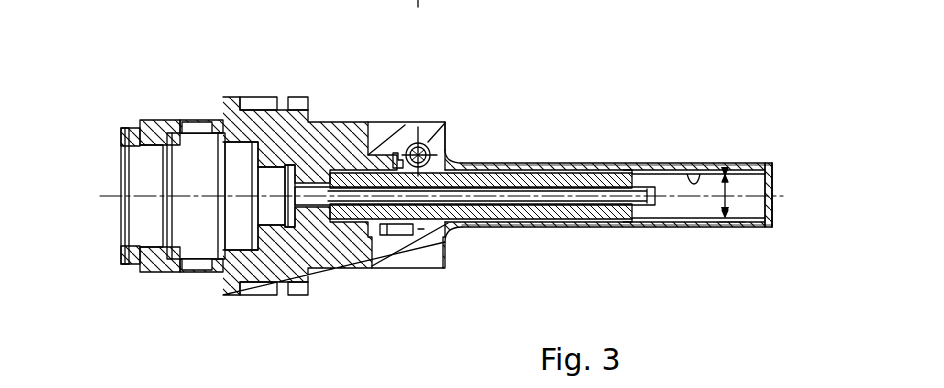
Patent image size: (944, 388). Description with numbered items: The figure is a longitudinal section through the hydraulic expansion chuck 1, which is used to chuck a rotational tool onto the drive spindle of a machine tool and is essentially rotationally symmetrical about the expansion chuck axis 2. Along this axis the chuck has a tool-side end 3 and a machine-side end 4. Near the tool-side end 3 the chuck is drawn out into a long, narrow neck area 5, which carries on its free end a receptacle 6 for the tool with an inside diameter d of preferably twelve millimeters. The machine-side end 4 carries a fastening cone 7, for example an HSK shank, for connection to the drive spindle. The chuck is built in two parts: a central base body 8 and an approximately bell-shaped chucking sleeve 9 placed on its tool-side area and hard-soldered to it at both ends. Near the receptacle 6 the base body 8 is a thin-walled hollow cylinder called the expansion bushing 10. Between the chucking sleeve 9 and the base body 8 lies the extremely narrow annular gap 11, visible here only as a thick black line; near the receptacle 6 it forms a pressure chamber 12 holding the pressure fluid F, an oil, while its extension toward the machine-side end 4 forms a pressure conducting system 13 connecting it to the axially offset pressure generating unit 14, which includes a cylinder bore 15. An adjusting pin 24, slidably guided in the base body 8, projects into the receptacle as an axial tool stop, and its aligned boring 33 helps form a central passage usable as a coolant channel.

The expansion chuck 1 is at (641, 59).
The expansion chuck axis 2 is at (783, 195).
The tool-side end 3 is at (816, 212).
The machine-side end 4 is at (60, 168).
The neck area 5 is at (631, 240).
The receptacle 6 is at (757, 207).
The fastening cone 7 is at (157, 120).
The base body 8 is at (328, 268).
The chucking sleeve 9 is at (452, 236).
The expansion bushing 10 is at (698, 184).
The annular gap 11 is at (523, 164).
The pressure chamber 12 is at (688, 226).
The pressure conducting system 13 is at (578, 228).
The pressure generating unit 14 is at (430, 145).
The cylinder bore 15 is at (410, 147).
The adjusting pin 24 is at (585, 187).
The boring of the adjusting pin 33 is at (203, 207).
The inside diameter d is at (727, 178).
The pressure fluid F is at (733, 224).